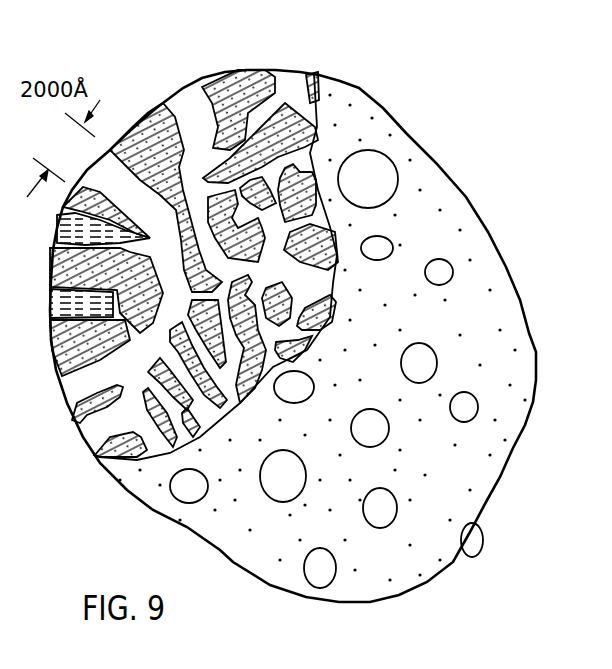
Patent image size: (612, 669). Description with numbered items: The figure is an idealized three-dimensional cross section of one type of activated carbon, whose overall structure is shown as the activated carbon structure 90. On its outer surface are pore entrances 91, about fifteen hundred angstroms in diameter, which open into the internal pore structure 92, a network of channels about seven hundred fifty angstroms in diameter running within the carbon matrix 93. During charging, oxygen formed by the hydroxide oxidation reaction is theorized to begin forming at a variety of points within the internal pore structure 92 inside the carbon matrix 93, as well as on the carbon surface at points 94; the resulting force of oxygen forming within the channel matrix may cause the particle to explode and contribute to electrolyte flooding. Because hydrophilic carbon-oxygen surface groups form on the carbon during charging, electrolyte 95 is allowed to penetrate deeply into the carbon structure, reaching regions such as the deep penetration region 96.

The activated carbon structure 90 is at (406, 137).
The pore entrances 91 is at (187, 487).
The internal pore structure 92 is at (303, 117).
The carbon matrix 93 is at (207, 90).
The surface points 94 is at (416, 320).
The electrolyte 95 is at (57, 228).
The deep penetration region 96 is at (122, 322).